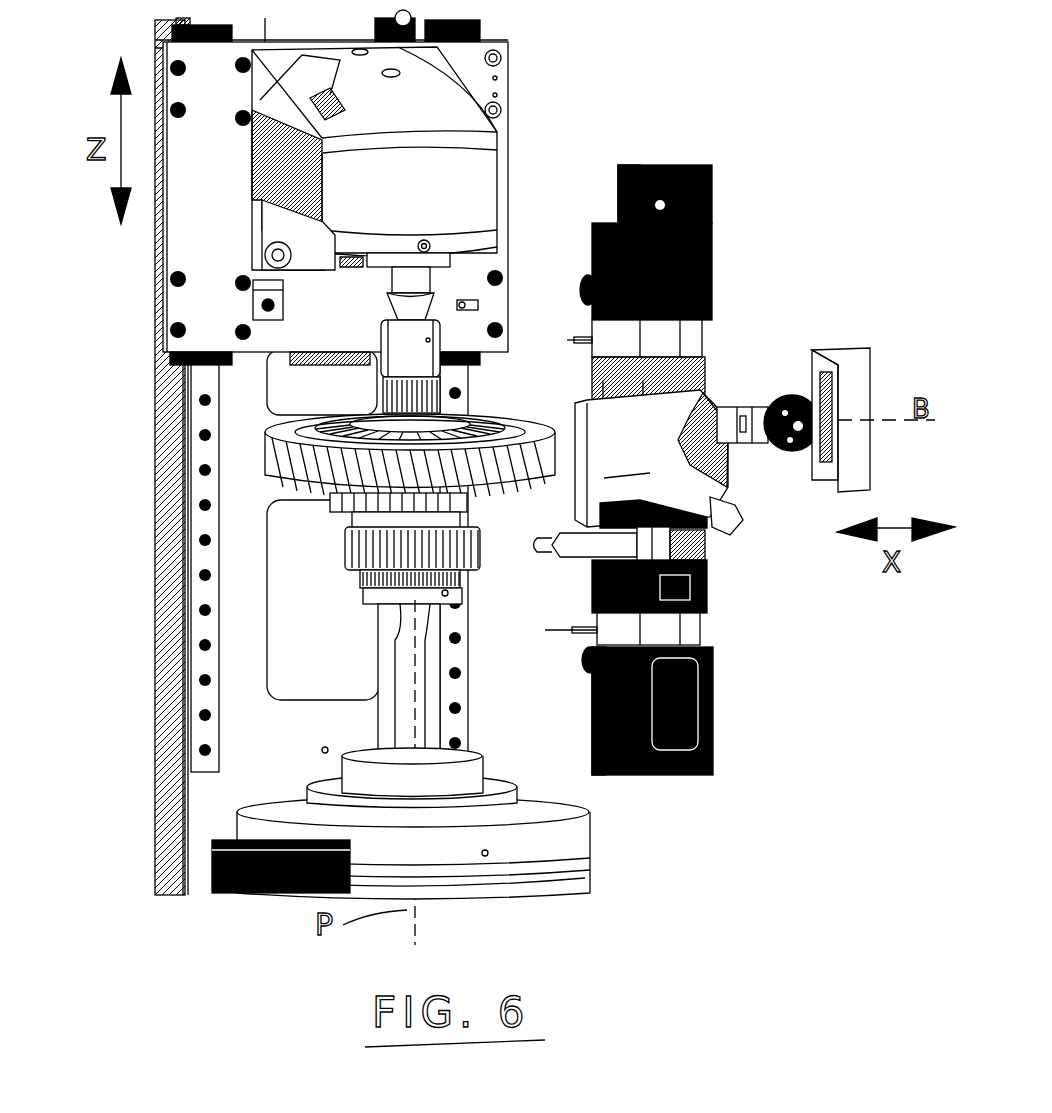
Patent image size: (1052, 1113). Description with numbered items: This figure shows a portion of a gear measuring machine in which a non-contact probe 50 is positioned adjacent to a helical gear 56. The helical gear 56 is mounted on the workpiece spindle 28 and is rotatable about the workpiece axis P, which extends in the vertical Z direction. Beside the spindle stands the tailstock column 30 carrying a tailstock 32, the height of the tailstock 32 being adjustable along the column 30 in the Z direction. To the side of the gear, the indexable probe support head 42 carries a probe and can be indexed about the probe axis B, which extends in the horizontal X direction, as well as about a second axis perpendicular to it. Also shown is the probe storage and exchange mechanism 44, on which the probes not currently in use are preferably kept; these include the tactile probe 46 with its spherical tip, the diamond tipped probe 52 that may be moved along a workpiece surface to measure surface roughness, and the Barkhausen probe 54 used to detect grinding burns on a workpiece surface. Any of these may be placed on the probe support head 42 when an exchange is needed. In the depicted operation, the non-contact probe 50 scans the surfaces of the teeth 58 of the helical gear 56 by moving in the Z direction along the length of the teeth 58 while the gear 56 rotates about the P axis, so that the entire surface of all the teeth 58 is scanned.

The workpiece spindle 28 is at (240, 808).
The tailstock column 30 is at (157, 399).
The tailstock 32 is at (468, 190).
The probe support head 42 is at (787, 390).
The probe storage and exchange mechanism 44 is at (680, 160).
The tactile probe 46 is at (688, 340).
The non-contact probe 50 is at (659, 462).
The diamond tipped probe 52 is at (690, 628).
The Barkhausen probe 54 is at (702, 545).
The helical gear 56 is at (265, 460).
The teeth 58 is at (298, 473).